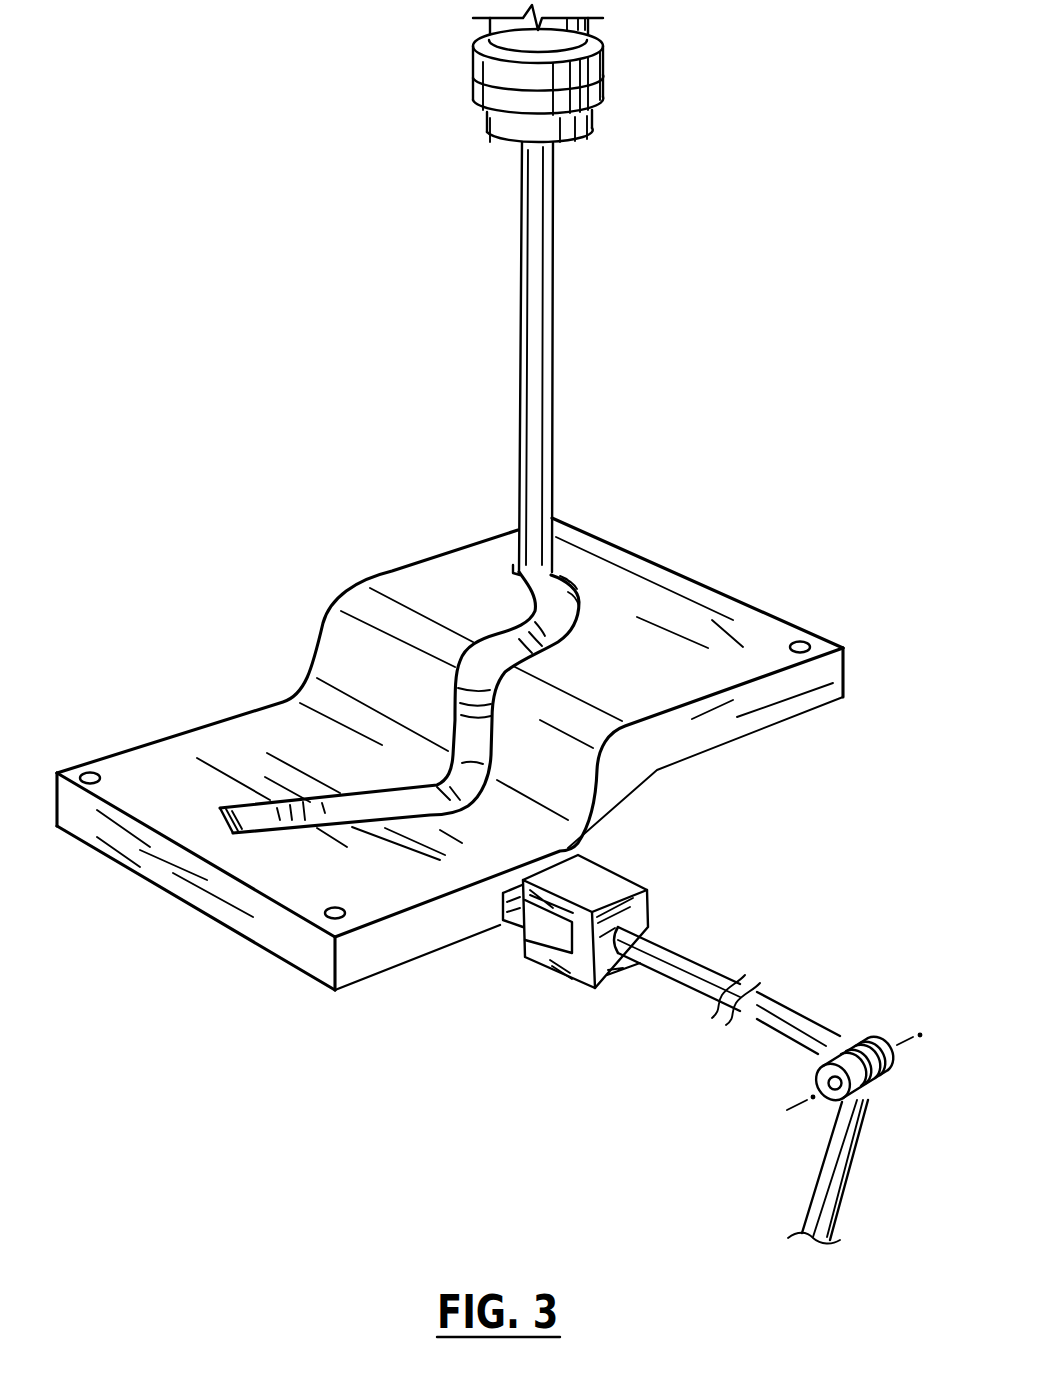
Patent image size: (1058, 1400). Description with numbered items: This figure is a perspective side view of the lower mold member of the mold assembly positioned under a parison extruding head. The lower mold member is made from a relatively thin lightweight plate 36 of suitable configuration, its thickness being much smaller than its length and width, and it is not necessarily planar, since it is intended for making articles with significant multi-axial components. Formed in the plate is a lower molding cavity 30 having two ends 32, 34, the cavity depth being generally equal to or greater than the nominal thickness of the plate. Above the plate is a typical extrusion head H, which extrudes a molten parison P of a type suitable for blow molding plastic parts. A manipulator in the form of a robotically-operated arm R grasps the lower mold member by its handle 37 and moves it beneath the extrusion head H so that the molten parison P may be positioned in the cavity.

The extrusion head H is at (602, 88).
The molten parison P is at (540, 310).
The lower molding cavity 30 is at (455, 700).
The end of lower molding cavity 32 is at (555, 548).
The end of lower molding cavity 34 is at (243, 830).
The plate 36 is at (753, 607).
The handle 37 is at (522, 922).
The robotically-operated arm R is at (718, 968).